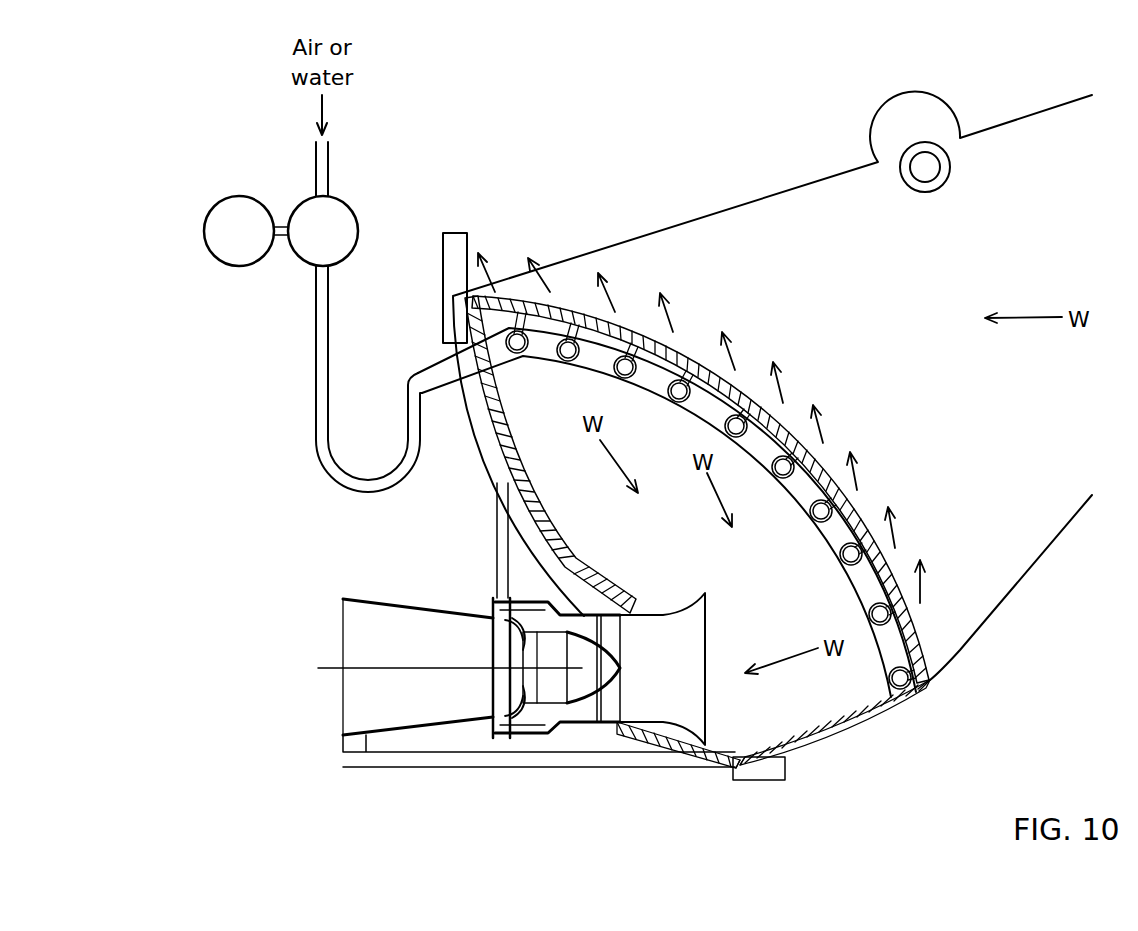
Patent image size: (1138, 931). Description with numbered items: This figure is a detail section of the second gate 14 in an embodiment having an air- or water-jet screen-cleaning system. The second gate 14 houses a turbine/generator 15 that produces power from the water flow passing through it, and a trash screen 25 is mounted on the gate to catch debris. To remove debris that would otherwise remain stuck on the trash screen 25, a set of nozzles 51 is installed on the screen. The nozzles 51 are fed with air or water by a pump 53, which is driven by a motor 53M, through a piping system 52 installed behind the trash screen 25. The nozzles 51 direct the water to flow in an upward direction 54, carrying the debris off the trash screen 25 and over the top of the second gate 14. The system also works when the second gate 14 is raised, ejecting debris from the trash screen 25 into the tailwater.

The second gate 14 is at (497, 482).
The turbine/generator 15 is at (534, 682).
The trash screen 25 is at (698, 350).
The nozzles 51 is at (852, 553).
The piping system 52 is at (322, 372).
The pump 53 is at (323, 204).
The motor 53M is at (246, 231).
The upward direction 54 is at (822, 432).